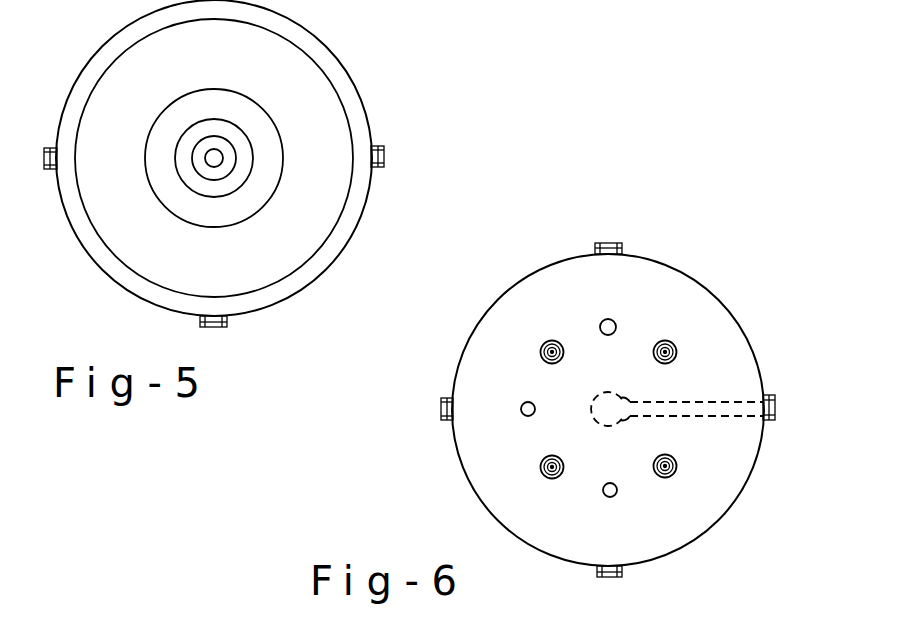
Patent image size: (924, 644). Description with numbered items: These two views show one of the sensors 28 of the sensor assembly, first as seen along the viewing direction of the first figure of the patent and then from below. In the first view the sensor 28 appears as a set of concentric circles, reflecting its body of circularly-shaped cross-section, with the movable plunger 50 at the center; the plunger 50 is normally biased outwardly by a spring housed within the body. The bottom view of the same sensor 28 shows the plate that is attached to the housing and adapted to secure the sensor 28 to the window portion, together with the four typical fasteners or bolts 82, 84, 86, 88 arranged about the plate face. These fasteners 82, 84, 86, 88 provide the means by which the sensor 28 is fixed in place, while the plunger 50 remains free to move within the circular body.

In FIG. 5, the sensor 28 is at (395, 38).
In FIG. 6, the sensor 28 is at (673, 215).
In FIG. 5, the plunger 50 is at (218, 162).
In FIG. 6, the fastener 82 is at (545, 343).
In FIG. 6, the fastener 84 is at (670, 338).
In FIG. 6, the fastener 86 is at (675, 470).
In FIG. 6, the fastener 88 is at (540, 465).